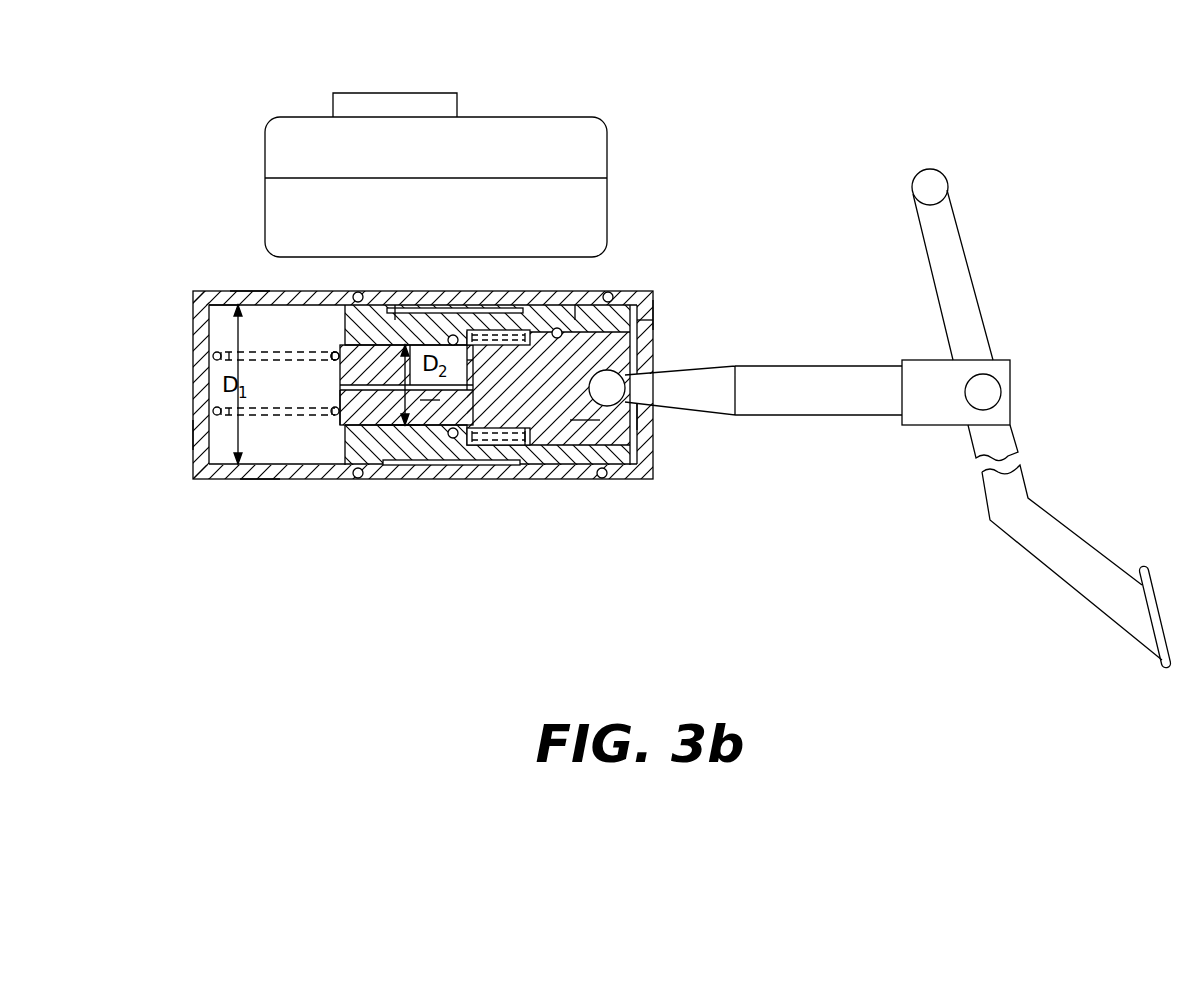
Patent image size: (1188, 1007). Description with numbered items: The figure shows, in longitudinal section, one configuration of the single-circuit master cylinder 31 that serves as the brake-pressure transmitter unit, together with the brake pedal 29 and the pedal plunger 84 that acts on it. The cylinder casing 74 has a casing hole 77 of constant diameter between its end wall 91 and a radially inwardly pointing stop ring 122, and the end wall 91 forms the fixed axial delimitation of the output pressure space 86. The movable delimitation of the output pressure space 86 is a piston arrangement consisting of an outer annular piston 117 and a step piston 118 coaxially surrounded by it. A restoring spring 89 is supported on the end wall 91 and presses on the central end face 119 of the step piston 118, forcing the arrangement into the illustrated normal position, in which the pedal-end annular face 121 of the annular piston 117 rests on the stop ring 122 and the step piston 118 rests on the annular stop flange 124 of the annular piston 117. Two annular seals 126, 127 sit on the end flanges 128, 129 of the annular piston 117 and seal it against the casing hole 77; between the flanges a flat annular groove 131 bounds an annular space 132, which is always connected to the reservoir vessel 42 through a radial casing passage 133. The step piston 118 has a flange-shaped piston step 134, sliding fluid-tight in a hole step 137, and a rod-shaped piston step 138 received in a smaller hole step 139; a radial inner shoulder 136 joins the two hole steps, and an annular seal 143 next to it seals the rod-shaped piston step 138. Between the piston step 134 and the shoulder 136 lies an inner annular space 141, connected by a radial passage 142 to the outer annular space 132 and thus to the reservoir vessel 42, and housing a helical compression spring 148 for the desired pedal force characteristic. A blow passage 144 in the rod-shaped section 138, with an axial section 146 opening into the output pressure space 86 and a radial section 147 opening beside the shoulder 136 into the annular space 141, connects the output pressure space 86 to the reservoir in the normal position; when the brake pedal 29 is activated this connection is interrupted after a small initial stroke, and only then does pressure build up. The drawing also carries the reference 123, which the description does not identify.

The brake pedal 29 is at (1083, 563).
The single-circuit master cylinder 31 is at (652, 292).
The reservoir vessel 42 is at (280, 137).
The cylinder casing 74 is at (251, 299).
The casing hole 77 is at (220, 303).
The pedal plunger 84 is at (803, 377).
The output pressure space 86 is at (258, 452).
The restoring spring 89 is at (282, 412).
The end wall 91 is at (200, 430).
The annular piston 117 is at (408, 462).
The step piston 118 is at (337, 394).
The end face of step piston 119 is at (337, 364).
The pedal-end annular face 121 is at (655, 333).
The stop ring 122 is at (655, 301).
The end cap bore 123 is at (637, 412).
The stop flange 124 is at (633, 437).
The annular seal 126 is at (353, 292).
The annular seal 127 is at (610, 292).
The end flange 128 is at (350, 312).
The end flange 129 is at (575, 300).
The flat annular groove 131 is at (478, 300).
The annular space 132 is at (429, 300).
The radial casing passage 133 is at (395, 300).
The flange-shaped piston step 134 is at (475, 376).
The radial inner shoulder 136 is at (458, 300).
The hole step 137 is at (547, 300).
The rod-shaped piston step 138 is at (428, 412).
The hole step 139 is at (395, 428).
The annular space 141 is at (523, 444).
The radial passage 142 is at (490, 300).
The annular seal 143 is at (454, 438).
The blow passage 144 is at (582, 428).
The axial section 146 is at (360, 478).
The radial section 147 is at (473, 367).
The helical compression spring 148 is at (487, 446).